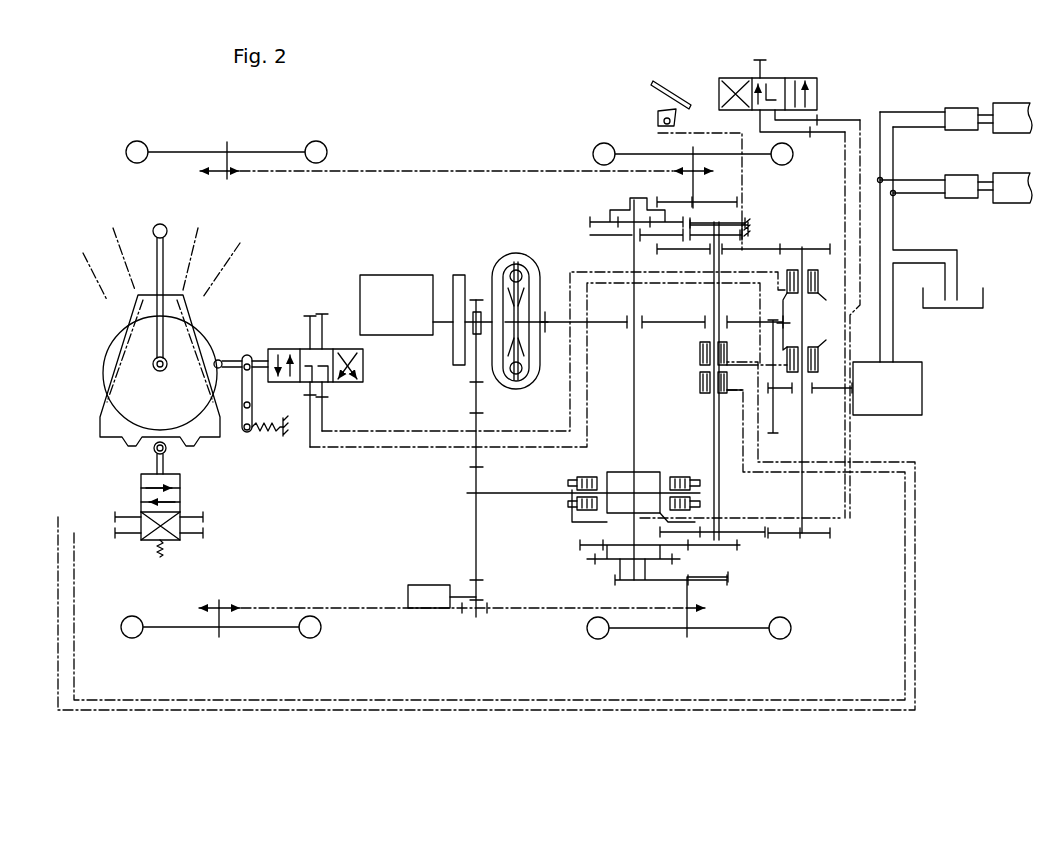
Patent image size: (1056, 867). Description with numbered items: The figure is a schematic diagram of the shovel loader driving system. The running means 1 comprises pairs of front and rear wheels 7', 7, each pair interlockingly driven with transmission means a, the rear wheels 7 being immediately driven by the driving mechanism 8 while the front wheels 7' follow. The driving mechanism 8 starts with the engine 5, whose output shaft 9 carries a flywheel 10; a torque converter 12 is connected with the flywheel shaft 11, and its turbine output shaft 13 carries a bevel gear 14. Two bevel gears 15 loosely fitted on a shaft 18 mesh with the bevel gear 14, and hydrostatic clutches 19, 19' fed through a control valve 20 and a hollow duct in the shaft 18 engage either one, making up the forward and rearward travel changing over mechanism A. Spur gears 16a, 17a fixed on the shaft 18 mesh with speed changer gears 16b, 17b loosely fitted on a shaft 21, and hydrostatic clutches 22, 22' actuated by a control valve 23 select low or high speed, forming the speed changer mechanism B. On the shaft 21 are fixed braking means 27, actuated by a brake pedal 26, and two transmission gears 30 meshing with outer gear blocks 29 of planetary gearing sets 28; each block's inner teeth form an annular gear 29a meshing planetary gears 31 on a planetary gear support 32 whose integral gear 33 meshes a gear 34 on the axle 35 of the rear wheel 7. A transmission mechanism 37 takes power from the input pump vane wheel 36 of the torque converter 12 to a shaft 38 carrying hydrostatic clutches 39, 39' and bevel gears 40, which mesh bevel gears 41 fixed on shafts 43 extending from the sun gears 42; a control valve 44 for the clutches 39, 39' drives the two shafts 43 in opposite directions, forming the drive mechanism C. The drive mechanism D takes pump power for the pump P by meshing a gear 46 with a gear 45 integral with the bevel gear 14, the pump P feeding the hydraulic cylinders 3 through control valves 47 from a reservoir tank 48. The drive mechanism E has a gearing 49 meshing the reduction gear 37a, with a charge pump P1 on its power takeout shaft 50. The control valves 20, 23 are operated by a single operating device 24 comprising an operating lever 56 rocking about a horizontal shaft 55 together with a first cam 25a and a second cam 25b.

The running means 1 is at (356, 112).
The hydraulic cylinders 3 is at (1021, 190).
The engine 5 is at (376, 275).
The rear wheels 7 is at (701, 367).
The front wheels 7' is at (224, 388).
The driving mechanism 8 is at (951, 489).
The output shaft 9 is at (443, 290).
The flywheel 10 is at (459, 274).
The flywheel shaft 11 is at (473, 327).
The torque converter 12 is at (540, 250).
The turbine output shaft 13 is at (611, 322).
The bevel gear 14 is at (780, 303).
The bevel gears 15 is at (818, 302).
The spur gear 16a is at (826, 248).
The speed changer gear 16b is at (660, 252).
The spur gear 17a is at (830, 534).
The speed changer gear 17b is at (760, 535).
The shaft 18 is at (802, 500).
The hydrostatic clutch 19 is at (894, 404).
The hydrostatic clutch 19' is at (798, 217).
The control valve 20 is at (296, 349).
The shaft 21 is at (742, 534).
The hydrostatic clutch 22 is at (700, 347).
The hydrostatic clutch 22' is at (693, 376).
The control valve 23 is at (182, 535).
The operating device 24 is at (60, 268).
The first cam 25a is at (104, 356).
The second cam 25b is at (110, 417).
The brake pedal 26 is at (655, 85).
The braking means 27 is at (729, 212).
The planetary gearing sets 28 is at (606, 195).
The outer gear blocks 29 is at (593, 558).
The annular gear 29a is at (588, 576).
The transmission gears 30 is at (732, 548).
The planetary gears 31 is at (597, 565).
The planetary gear support 32 is at (613, 577).
The gear 33 is at (641, 580).
The gear 34 is at (665, 632).
The axle 35 is at (690, 592).
The input pump vane wheel 36 is at (532, 376).
The transmission mechanism 37 is at (457, 403).
The reduction gear 37a is at (474, 468).
The shaft 38 is at (469, 494).
The hydrostatic clutch 39 is at (734, 496).
The hydrostatic clutch 39' is at (526, 467).
The bevel gears 40 is at (592, 477).
The bevel gears 41 is at (626, 470).
The sun gears 42 is at (603, 545).
The shafts 43 is at (636, 298).
The control valve 44 is at (820, 92).
The gear 45 is at (782, 318).
The gear 46 is at (778, 424).
The control valves 47 is at (956, 172).
The reservoir tank 48 is at (985, 301).
The gearing 49 is at (471, 583).
The power takeout shaft 50 is at (450, 585).
The horizontal shaft 55 is at (167, 362).
The operating lever 56 is at (164, 247).
The transmission means a is at (508, 171).
The forward and rearward travel changing over mechanism A is at (856, 348).
The speed changer mechanism B is at (820, 447).
The drive mechanism C is at (512, 618).
The drive mechanism D is at (992, 409).
The drive mechanism E is at (346, 636).
The pump P is at (915, 386).
The charge pump P1 is at (407, 592).